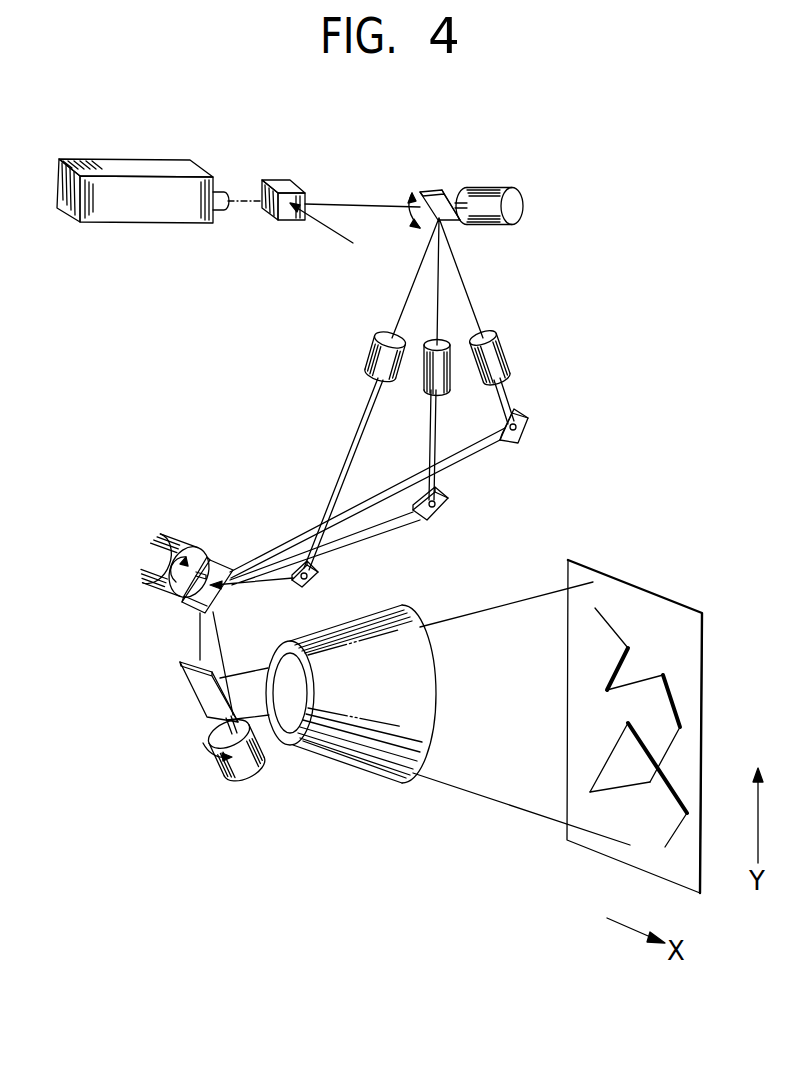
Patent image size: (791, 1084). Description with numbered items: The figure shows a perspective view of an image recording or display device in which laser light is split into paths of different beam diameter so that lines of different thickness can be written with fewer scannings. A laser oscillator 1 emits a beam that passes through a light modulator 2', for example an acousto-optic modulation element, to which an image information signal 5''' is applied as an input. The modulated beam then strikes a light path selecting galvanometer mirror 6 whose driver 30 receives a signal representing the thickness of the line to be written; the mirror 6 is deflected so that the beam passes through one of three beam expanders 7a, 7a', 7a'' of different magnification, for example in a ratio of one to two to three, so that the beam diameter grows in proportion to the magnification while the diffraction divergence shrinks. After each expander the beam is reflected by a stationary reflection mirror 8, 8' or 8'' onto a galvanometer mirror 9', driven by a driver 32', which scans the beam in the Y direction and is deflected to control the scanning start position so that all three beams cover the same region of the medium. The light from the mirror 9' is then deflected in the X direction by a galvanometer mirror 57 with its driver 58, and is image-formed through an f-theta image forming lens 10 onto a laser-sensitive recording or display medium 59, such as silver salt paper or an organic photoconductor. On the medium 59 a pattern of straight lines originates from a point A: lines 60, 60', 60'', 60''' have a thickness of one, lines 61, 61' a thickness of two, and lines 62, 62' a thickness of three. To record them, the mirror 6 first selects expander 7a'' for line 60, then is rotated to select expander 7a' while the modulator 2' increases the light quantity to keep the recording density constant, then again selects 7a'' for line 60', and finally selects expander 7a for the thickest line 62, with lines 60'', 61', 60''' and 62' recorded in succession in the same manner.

The laser oscillator 1 is at (148, 160).
The light modulator 2' is at (341, 169).
The information signal 5''' is at (321, 237).
The light path selecting galvanometer mirror 6 is at (433, 191).
The driver 30 is at (510, 203).
The beam expander 7a is at (355, 449).
The beam expander 7a' is at (420, 420).
The beam expander 7a'' is at (487, 383).
The reflection mirror 8 is at (325, 577).
The reflection mirror 8' is at (454, 508).
The reflection mirror 8'' is at (542, 426).
The driver 32' is at (176, 543).
The galvanometer mirror 9' is at (194, 600).
The galvanometer mirror 57 is at (207, 698).
The driver 58 is at (243, 768).
The f-theta lens 10 is at (352, 770).
The recording or display medium 59 is at (627, 857).
The point A is at (609, 599).
The line 60 is at (634, 623).
The line 60' is at (643, 659).
The line 60'' is at (663, 815).
The line 60''' is at (624, 752).
The line 61 is at (599, 669).
The line 61' is at (620, 812).
The line 62 is at (646, 701).
The line 62' is at (685, 768).